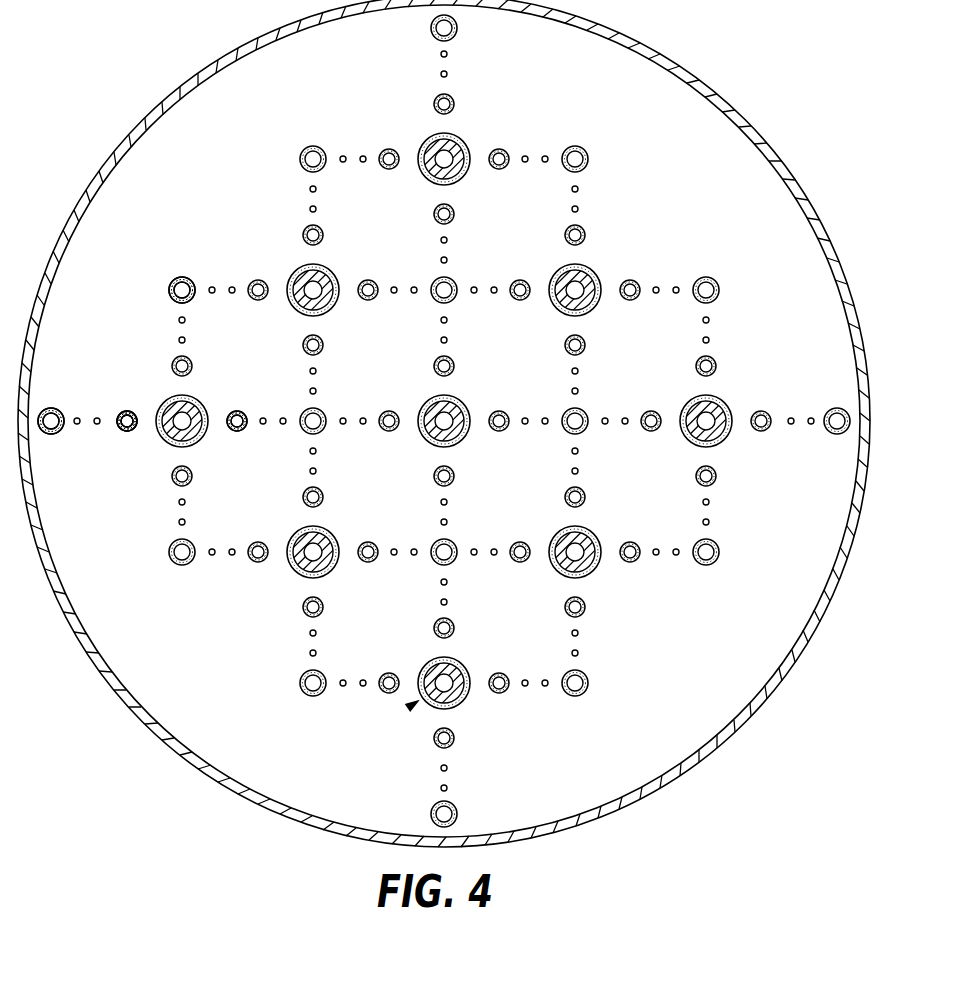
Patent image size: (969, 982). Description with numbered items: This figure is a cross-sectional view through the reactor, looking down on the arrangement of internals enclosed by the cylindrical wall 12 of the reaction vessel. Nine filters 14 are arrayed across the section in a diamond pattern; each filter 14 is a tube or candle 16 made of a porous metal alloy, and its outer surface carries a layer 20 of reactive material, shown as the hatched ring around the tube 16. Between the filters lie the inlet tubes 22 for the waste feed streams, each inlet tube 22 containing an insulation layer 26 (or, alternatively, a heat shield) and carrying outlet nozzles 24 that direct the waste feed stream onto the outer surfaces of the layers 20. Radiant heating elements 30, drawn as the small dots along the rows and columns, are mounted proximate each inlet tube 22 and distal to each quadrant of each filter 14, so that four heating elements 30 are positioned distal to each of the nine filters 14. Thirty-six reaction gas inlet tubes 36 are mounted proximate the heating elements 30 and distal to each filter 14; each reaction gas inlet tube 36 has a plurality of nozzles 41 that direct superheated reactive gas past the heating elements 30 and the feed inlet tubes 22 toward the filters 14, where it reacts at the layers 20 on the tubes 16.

The cylindrical wall 12 is at (692, 68).
The filter 14 is at (408, 708).
The tube or candle 16 is at (457, 404).
The layer of reactive material 20 is at (459, 443).
The inlet tube 22 is at (376, 298).
The outlet nozzle 24 is at (135, 411).
The insulation layer 26 is at (120, 412).
The radiant heating element 30 is at (452, 240).
The reaction gas inlet tube 36 is at (593, 152).
The nozzle 41 is at (197, 283).